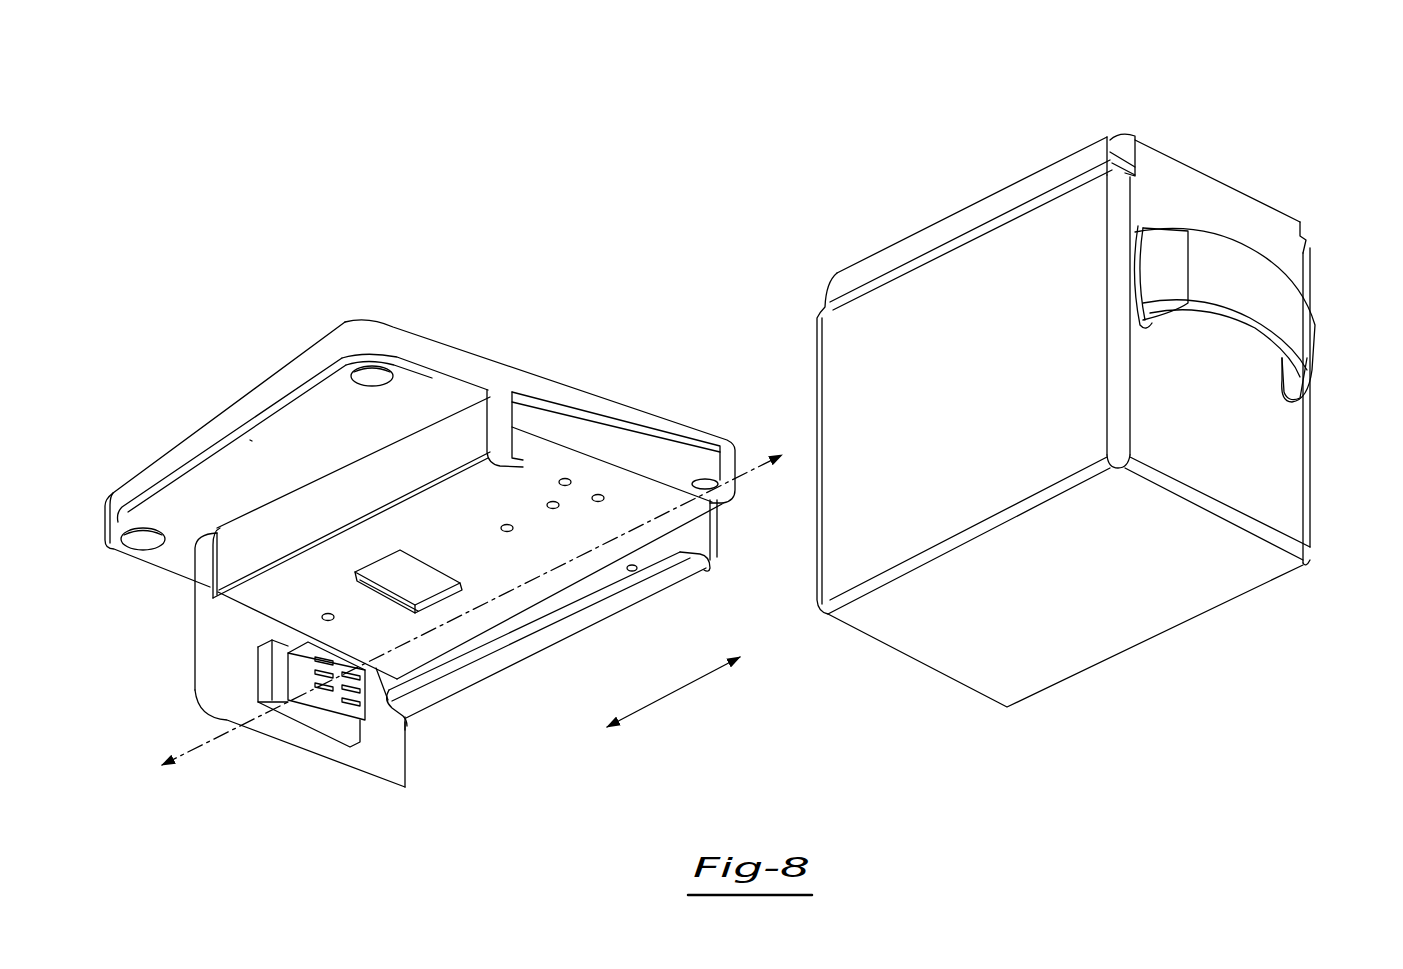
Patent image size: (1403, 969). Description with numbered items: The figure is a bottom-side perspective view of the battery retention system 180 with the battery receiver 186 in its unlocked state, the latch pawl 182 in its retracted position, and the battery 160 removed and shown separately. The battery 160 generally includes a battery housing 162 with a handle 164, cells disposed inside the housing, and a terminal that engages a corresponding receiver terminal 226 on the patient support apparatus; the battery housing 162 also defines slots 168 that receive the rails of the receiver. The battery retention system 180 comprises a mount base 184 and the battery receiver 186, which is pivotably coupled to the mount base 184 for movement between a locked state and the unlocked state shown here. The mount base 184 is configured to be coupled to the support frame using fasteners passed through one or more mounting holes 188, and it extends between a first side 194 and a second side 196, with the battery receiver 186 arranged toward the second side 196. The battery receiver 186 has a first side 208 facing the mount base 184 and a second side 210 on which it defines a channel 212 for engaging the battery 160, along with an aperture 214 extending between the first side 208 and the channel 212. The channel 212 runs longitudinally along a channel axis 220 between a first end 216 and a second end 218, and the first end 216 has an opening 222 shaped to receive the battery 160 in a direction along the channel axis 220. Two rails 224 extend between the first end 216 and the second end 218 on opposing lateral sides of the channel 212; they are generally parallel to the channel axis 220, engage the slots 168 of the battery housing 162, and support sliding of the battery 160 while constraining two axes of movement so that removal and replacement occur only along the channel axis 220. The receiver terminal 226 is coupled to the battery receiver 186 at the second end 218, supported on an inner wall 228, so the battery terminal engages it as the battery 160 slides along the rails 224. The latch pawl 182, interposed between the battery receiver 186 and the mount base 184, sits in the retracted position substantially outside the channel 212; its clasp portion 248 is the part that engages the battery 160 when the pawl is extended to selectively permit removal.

The battery 160 is at (1235, 108).
The battery housing 162 is at (1237, 183).
The handle 164 is at (1280, 310).
The slots 168 is at (1108, 157).
The battery retention system 180 is at (347, 213).
The latch pawl 182 is at (412, 572).
The clasp portion 248 is at (407, 577).
The mount base 184 is at (292, 367).
The battery receiver 186 is at (465, 694).
The mounting holes 188 is at (370, 386).
The first side 194 is at (594, 391).
The second side 196 is at (281, 449).
The first side 208 is at (518, 388).
The second side 210 is at (618, 604).
The channel 212 is at (627, 543).
The aperture 214 is at (383, 588).
The first end 216 is at (732, 566).
The second end 218 is at (416, 723).
The channel axis 220 is at (748, 472).
The opening 222 is at (627, 477).
The rails 224 is at (518, 455).
The receiver terminal 226 is at (337, 710).
The inner wall 228 is at (227, 660).